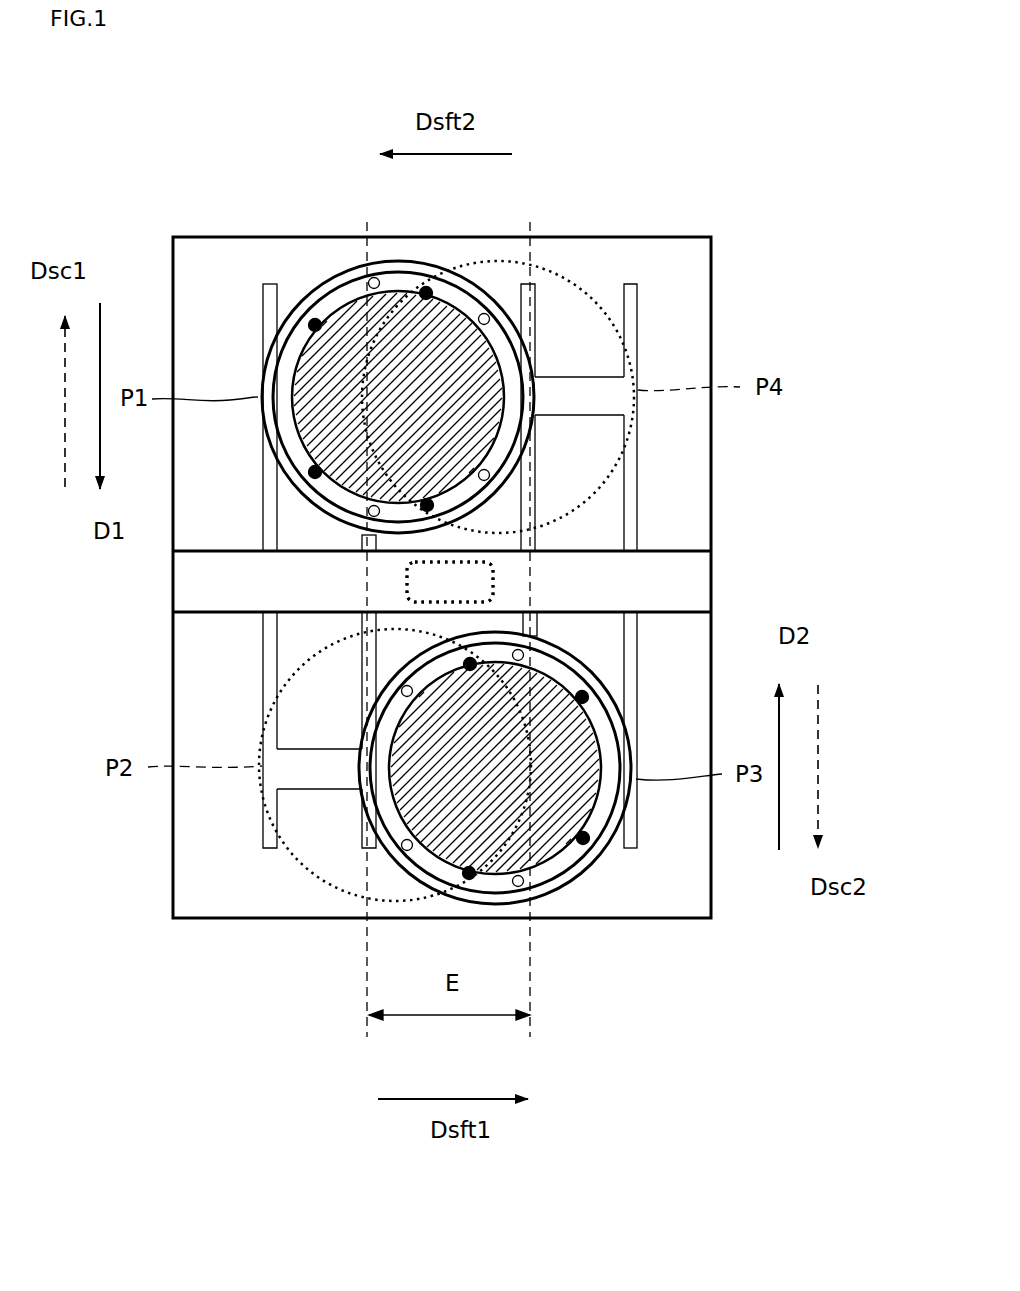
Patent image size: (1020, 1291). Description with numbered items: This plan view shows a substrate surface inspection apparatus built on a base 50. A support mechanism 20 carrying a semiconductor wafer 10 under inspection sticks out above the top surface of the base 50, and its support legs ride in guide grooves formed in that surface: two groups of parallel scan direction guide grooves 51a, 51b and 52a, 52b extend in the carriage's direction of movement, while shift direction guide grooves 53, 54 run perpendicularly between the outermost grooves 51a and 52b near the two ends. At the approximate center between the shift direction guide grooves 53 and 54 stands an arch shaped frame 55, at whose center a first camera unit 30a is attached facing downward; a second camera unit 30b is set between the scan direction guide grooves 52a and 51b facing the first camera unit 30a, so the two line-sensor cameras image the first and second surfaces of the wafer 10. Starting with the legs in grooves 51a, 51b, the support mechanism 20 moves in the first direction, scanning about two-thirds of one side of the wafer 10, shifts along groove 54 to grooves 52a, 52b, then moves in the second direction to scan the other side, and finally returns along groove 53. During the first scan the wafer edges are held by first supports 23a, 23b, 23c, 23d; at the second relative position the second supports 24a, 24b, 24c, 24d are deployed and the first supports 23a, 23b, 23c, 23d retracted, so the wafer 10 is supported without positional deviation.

The semiconductor wafer 10 is at (305, 374).
The support mechanism 20 is at (316, 268).
The first support 23a is at (315, 325).
The first support 23b is at (426, 293).
The first support 23c is at (427, 505).
The first support 23d is at (315, 472).
The second support 24a is at (583, 838).
The second support 24b is at (469, 873).
The second support 24c is at (470, 664).
The second support 24d is at (582, 697).
The first camera unit 30a is at (486, 579).
The second camera unit 30b is at (450, 582).
The base 50 is at (183, 237).
The scan direction guide groove 51a is at (268, 655).
The scan direction guide groove 51b is at (535, 306).
The scan direction guide groove 52a is at (362, 835).
The scan direction guide groove 52b is at (638, 318).
The shift direction guide groove 53 is at (580, 398).
The shift direction guide groove 54 is at (310, 770).
The arch shaped frame 55 is at (172, 591).